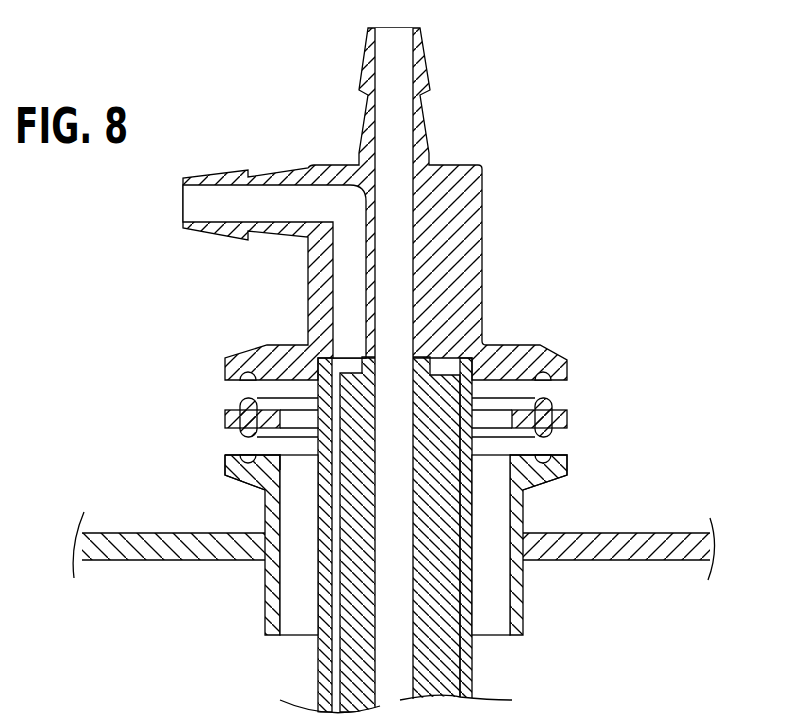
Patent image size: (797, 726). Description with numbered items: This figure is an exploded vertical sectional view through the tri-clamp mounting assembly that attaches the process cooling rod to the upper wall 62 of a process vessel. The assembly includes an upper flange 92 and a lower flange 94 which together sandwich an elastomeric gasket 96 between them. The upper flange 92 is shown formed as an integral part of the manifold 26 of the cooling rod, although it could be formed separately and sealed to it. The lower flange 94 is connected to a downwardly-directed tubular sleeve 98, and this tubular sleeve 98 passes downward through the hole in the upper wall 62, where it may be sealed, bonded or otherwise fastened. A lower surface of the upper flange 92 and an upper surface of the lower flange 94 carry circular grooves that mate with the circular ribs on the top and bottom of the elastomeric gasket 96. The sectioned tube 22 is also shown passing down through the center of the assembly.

The manifold 26 is at (482, 196).
The upper flange 92 is at (225, 367).
The elastomeric gasket 96 is at (225, 415).
The lower flange 94 is at (225, 458).
The tubular sleeve 98 is at (265, 583).
The upper wall 62 is at (642, 533).
The cannula tube 22 is at (472, 670).